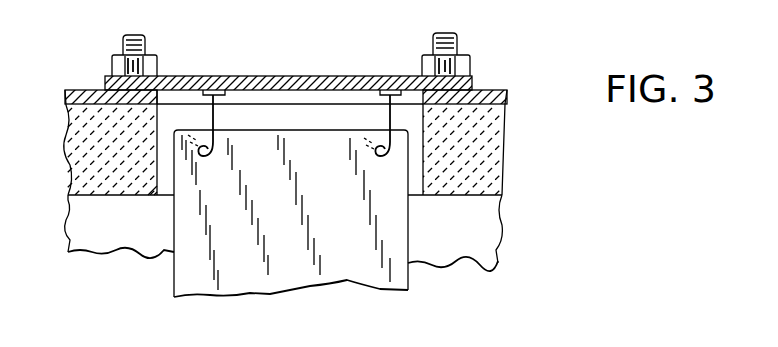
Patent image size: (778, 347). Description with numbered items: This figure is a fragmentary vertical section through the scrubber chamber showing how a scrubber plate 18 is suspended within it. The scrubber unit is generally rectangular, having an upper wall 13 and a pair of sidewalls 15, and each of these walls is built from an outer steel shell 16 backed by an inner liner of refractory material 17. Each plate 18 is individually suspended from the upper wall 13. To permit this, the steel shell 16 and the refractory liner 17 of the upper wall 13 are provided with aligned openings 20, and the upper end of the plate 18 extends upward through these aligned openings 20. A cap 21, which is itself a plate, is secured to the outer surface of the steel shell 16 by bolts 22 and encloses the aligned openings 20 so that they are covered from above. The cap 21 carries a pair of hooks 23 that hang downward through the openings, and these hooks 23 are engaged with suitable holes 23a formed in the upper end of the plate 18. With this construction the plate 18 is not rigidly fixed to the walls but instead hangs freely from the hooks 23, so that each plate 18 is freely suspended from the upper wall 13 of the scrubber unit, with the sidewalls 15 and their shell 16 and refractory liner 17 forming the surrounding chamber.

The upper wall 13 is at (508, 80).
The sidewalls 15 is at (494, 245).
The outer steel shell 16 is at (85, 90).
The refractory liner 17 is at (78, 147).
The plate 18 is at (282, 272).
The aligned openings 20 is at (158, 198).
The cap 21 is at (367, 75).
The bolts 22 is at (146, 44).
The hooks 23 is at (216, 117).
The holes 23a is at (209, 160).